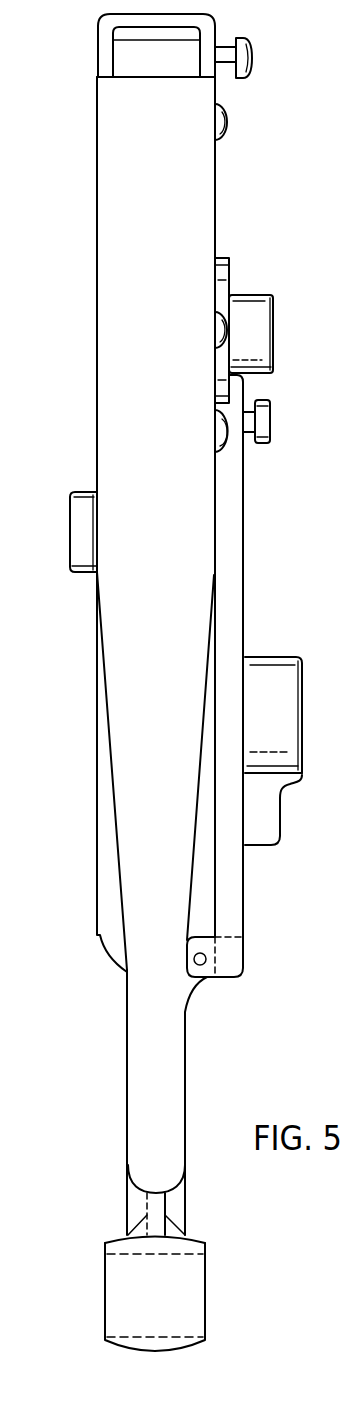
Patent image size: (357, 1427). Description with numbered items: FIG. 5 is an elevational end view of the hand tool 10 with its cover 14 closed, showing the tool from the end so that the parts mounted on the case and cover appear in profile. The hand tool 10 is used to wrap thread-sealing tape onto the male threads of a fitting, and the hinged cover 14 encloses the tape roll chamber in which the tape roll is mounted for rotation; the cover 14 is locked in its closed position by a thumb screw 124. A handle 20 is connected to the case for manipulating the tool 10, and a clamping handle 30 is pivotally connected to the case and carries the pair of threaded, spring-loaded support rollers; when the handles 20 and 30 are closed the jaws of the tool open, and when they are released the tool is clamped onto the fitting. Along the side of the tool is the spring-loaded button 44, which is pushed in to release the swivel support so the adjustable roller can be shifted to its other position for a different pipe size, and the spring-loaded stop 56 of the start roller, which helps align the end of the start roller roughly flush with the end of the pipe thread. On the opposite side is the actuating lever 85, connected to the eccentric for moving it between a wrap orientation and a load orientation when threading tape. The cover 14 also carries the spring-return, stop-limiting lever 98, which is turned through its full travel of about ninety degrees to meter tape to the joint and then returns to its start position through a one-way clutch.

The hand tool 10 is at (284, 384).
The hinged cover 14 is at (237, 921).
The handle 20 is at (150, 1216).
The clamping handle 30 is at (132, 1140).
The button 44 is at (250, 70).
The spring-loaded stop 56 is at (231, 266).
The actuating lever 85 is at (82, 520).
The stop-limiting lever 98 is at (270, 812).
The thumb screw 124 is at (271, 428).